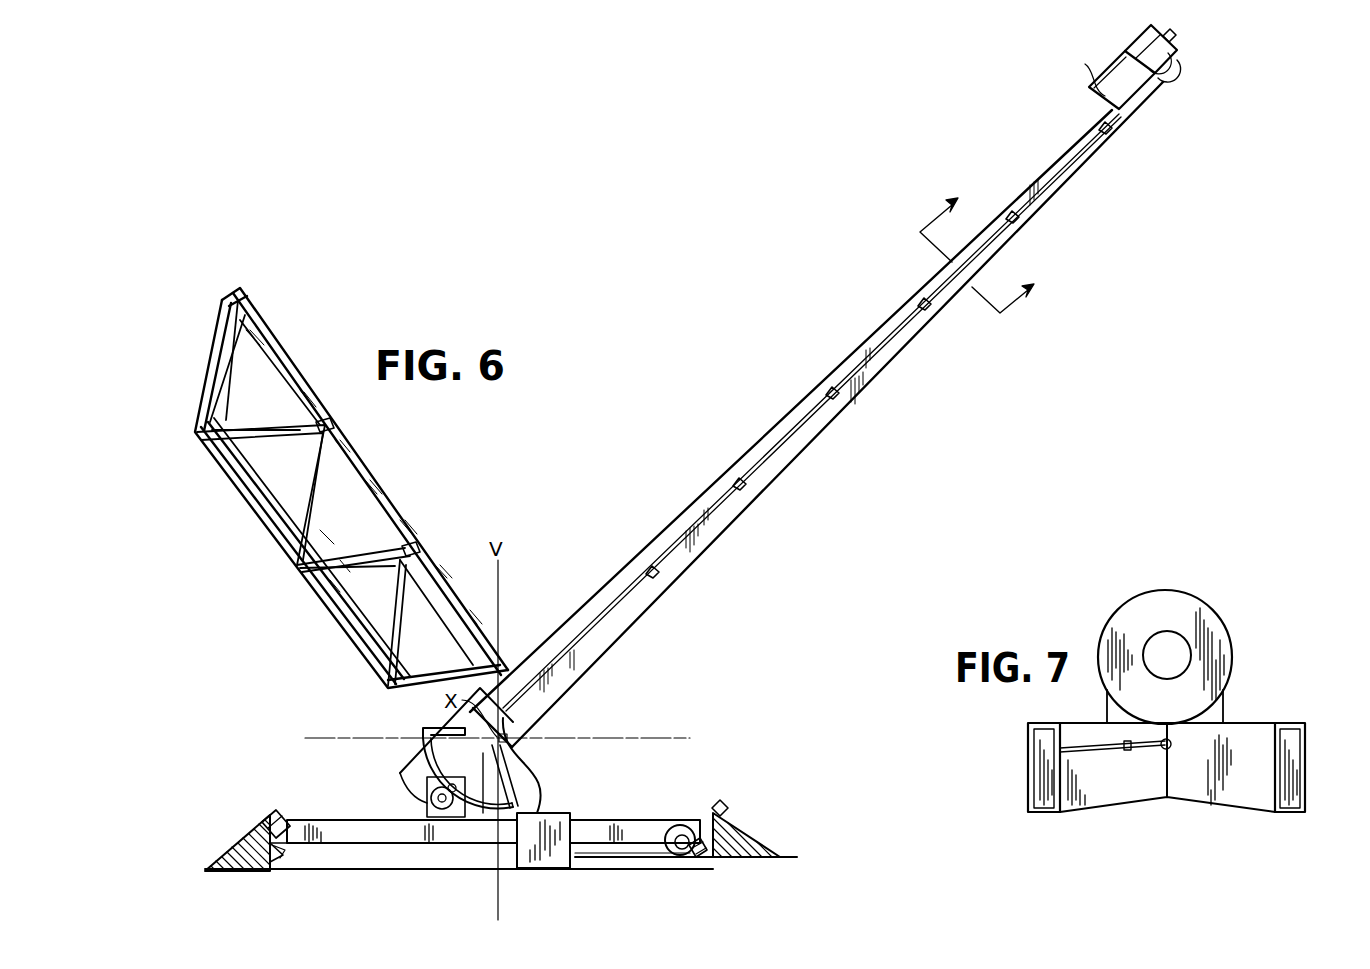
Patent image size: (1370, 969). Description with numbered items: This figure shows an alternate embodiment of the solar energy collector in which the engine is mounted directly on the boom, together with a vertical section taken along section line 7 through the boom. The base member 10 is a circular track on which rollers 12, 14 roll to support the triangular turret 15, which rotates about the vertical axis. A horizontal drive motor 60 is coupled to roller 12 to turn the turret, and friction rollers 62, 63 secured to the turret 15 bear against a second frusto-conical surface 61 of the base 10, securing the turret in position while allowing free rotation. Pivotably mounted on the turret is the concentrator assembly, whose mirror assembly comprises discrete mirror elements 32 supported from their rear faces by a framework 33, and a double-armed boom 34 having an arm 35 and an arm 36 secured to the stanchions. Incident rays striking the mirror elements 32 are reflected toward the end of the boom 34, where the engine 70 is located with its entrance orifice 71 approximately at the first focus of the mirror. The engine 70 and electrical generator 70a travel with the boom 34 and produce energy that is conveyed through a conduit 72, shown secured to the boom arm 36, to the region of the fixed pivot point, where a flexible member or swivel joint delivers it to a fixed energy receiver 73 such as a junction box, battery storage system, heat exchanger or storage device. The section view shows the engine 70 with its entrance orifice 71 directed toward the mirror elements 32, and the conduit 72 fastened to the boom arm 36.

In FIG. 6, the section line 7— 7 is at (983, 250).
In FIG. 6, the base member 10 is at (210, 866).
In FIG. 6, the roller 12 is at (722, 812).
In FIG. 6, the roller 14 is at (272, 816).
In FIG. 6, the turret 15 is at (356, 823).
In FIG. 6, the mirror elements 32 is at (327, 436).
In FIG. 6, the framework 33 is at (223, 318).
In FIG. 6, the boom 34 is at (792, 413).
In FIG. 7, the boom 34 is at (1288, 716).
In FIG. 7, the arm 35 is at (1303, 768).
In FIG. 6, the arm 36 is at (858, 396).
In FIG. 7, the arm 36 is at (1028, 766).
In FIG. 6, the horizontal drive motor 60 is at (681, 828).
In FIG. 6, the second frusto-conical surface 61 is at (651, 858).
In FIG. 6, the friction roller 62 is at (264, 856).
In FIG. 6, the friction roller 63 is at (722, 858).
In FIG. 6, the engine 70 is at (1132, 56).
In FIG. 7, the engine 70 is at (1112, 626).
In FIG. 6, the electrical generator 70a is at (1174, 42).
In FIG. 6, the entrance orifice 71 is at (1098, 97).
In FIG. 7, the entrance orifice 71 is at (1178, 646).
In FIG. 6, the conduit 72 is at (1113, 130).
In FIG. 7, the conduit 72 is at (1070, 750).
In FIG. 6, the energy receiver 73 is at (552, 820).